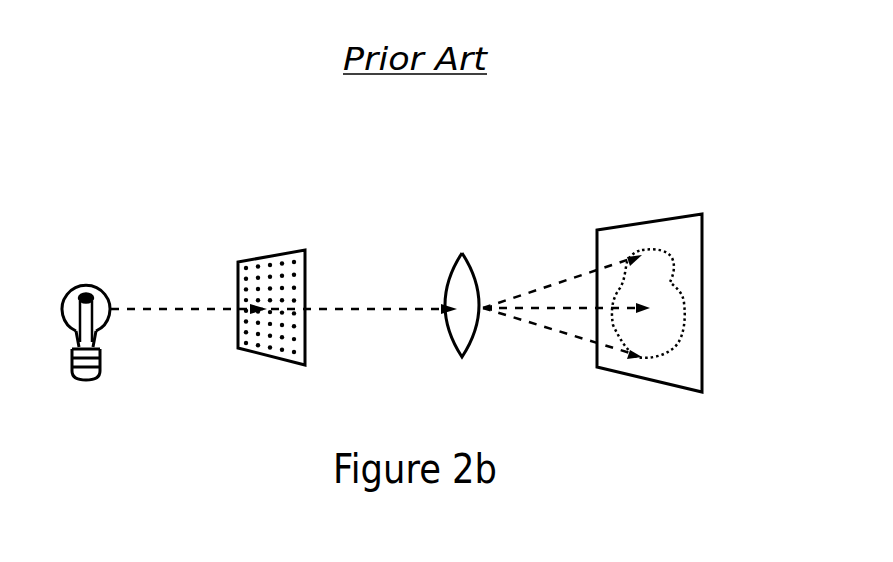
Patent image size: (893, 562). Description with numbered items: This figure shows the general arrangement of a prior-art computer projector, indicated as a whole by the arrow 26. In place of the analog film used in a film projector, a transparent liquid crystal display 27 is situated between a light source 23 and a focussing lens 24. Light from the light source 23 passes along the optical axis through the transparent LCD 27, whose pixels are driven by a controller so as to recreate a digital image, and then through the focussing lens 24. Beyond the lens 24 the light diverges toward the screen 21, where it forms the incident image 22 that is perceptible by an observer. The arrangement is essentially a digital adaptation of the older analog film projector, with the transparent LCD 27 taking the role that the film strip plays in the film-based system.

The screen 21 is at (700, 214).
The incident image 22 is at (670, 283).
The light source 23 is at (104, 293).
The focussing lens 24 is at (465, 255).
The prior art projection system 26 is at (570, 202).
The transparent liquid crystal display 27 is at (305, 265).